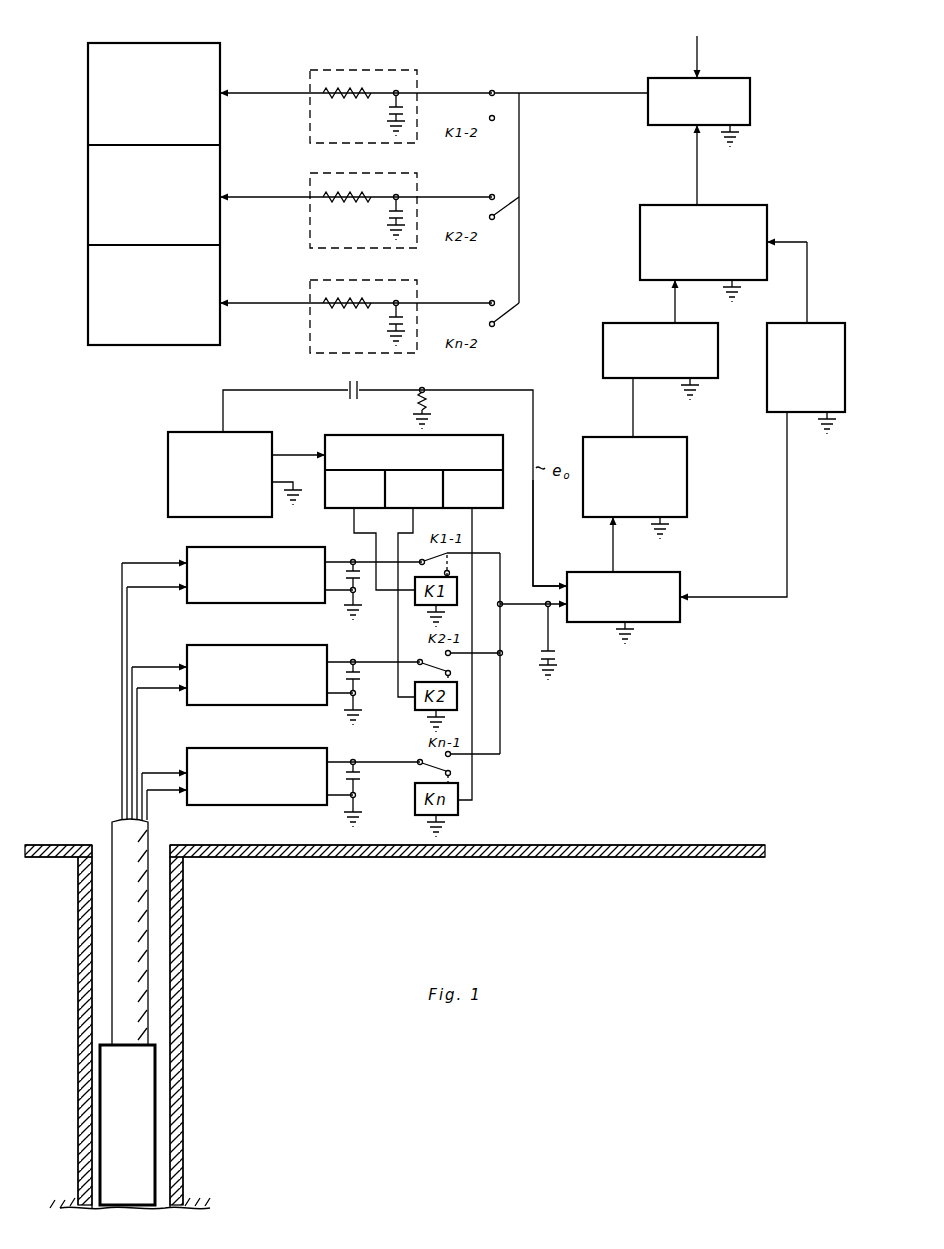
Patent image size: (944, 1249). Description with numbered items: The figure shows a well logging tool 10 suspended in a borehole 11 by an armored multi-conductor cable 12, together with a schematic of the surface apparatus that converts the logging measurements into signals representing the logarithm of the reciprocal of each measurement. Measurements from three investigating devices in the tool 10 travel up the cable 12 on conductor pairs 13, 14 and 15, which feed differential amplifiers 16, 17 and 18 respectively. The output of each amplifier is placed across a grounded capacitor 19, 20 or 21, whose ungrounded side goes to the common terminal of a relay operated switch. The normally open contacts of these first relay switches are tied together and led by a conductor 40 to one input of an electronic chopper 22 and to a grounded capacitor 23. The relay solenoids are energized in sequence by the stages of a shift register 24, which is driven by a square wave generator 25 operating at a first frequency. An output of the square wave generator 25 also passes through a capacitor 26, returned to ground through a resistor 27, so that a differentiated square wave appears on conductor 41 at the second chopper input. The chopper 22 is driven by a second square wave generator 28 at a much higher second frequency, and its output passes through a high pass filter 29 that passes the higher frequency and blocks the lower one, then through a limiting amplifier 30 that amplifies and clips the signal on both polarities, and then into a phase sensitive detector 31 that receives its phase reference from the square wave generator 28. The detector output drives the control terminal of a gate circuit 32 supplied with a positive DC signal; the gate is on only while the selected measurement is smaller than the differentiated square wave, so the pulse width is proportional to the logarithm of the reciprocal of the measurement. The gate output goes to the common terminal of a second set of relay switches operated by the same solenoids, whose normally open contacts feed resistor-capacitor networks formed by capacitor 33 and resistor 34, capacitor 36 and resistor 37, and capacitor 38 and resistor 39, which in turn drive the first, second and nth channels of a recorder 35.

The tool 10 is at (143, 1086).
The borehole 11 is at (167, 925).
The armored multi-conductor cable 12 is at (118, 944).
The conductor pair 13 is at (144, 559).
The conductor pair 14 is at (165, 665).
The conductor pair 15 is at (170, 772).
The differential amplifier 16 is at (305, 547).
The differential amplifier 17 is at (290, 645).
The differential amplifier 18 is at (285, 748).
The capacitor 19 is at (364, 581).
The capacitor 20 is at (370, 678).
The capacitor 21 is at (367, 780).
The electronic chopper 22 is at (680, 618).
The capacitor 23 is at (560, 655).
The shift register 24 is at (455, 437).
The square wave generator 25 is at (168, 432).
The capacitor 26 is at (348, 380).
The resistor 27 is at (412, 405).
The square wave generator 28 is at (828, 323).
The high pass filter 29 is at (687, 478).
The limiting amplifier 30 is at (603, 323).
The phase sensitive detector 31 is at (640, 215).
The gate circuit 32 is at (648, 119).
The capacitor 33 is at (385, 112).
The resistor 34 is at (323, 79).
The recorder 35 is at (88, 61).
The capacitor 36 is at (385, 216).
The resistor 37 is at (323, 182).
The capacitor 38 is at (385, 322).
The resistor 39 is at (323, 289).
The conductor 40 is at (550, 608).
The conductor 41 is at (540, 584).